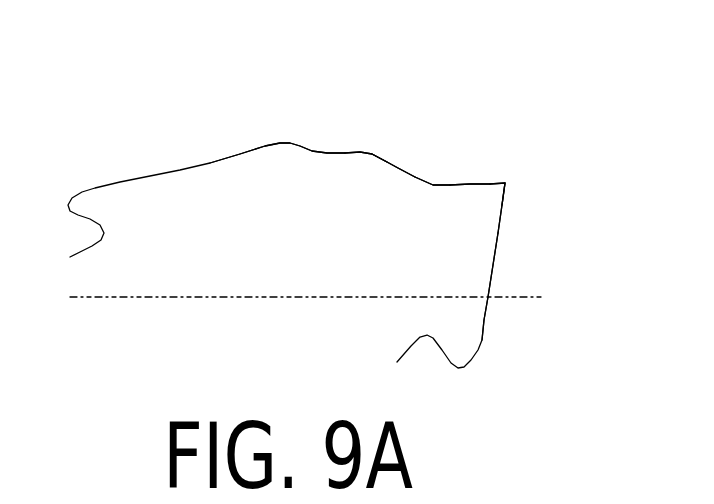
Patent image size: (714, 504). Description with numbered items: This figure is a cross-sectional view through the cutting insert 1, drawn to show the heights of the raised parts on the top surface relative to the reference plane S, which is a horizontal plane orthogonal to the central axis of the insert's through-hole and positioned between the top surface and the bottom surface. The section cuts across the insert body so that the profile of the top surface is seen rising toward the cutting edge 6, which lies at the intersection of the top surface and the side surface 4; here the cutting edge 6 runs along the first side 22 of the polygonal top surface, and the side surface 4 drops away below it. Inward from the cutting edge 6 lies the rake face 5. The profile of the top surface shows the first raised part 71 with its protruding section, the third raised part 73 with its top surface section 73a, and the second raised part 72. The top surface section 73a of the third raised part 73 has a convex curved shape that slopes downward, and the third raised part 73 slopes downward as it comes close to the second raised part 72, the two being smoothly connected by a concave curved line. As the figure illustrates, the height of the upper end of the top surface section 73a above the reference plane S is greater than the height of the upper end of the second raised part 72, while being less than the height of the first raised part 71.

The cutting insert 1 is at (174, 55).
The reference plane S is at (293, 297).
The first raised part 71 is at (288, 86).
The top surface section 73a is at (376, 103).
The third raised part 73 is at (413, 96).
The second raised part 72 is at (446, 128).
The rake face 5 is at (503, 125).
The first side 22 is at (544, 162).
The cutting edge 6 is at (566, 212).
The side surface 4 is at (537, 286).